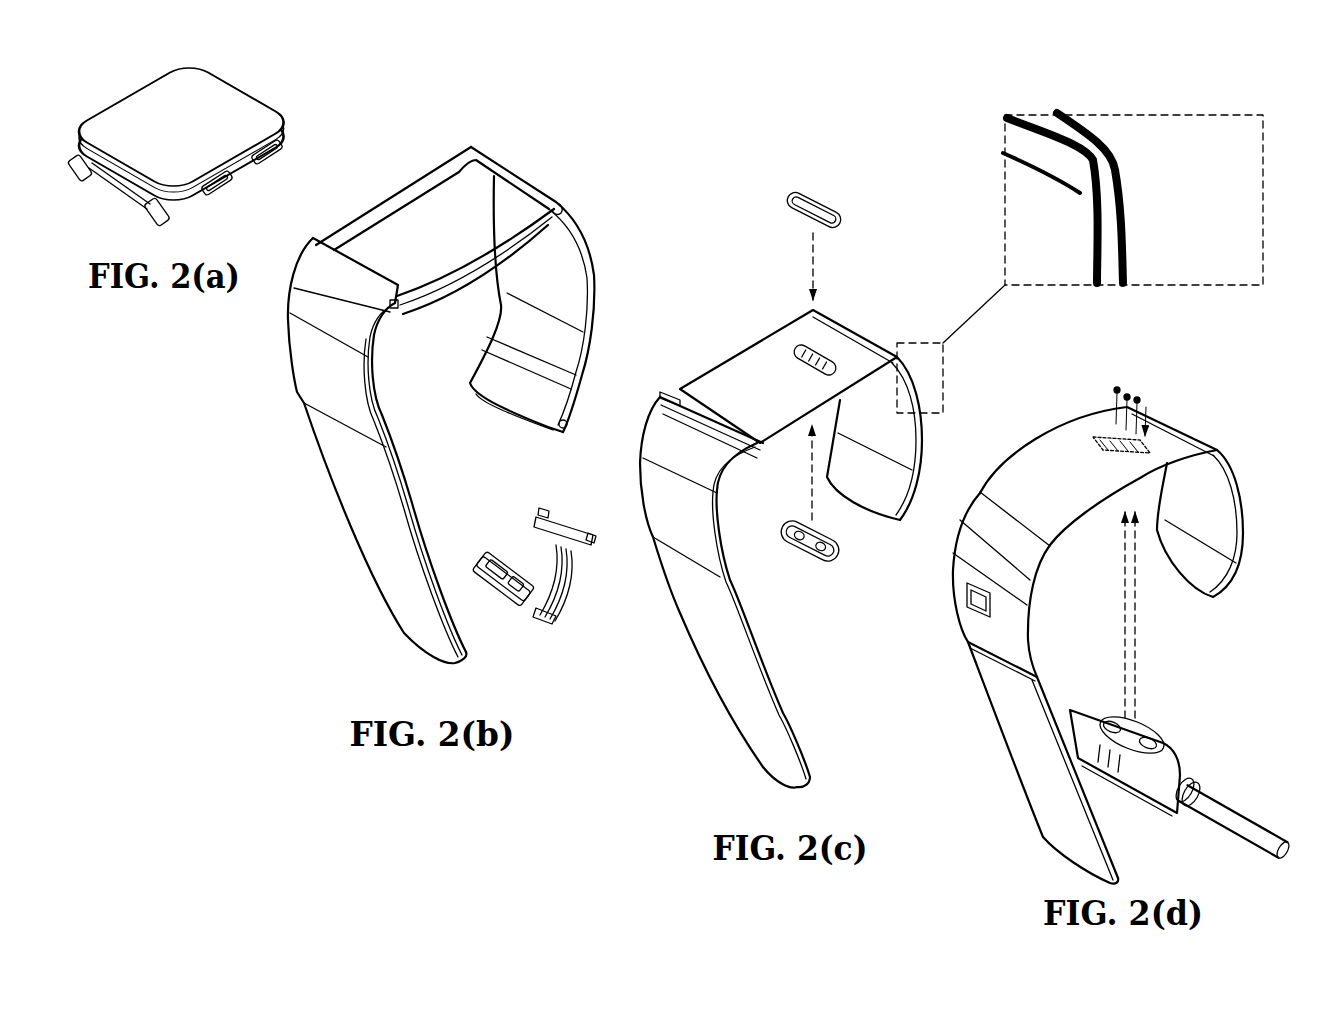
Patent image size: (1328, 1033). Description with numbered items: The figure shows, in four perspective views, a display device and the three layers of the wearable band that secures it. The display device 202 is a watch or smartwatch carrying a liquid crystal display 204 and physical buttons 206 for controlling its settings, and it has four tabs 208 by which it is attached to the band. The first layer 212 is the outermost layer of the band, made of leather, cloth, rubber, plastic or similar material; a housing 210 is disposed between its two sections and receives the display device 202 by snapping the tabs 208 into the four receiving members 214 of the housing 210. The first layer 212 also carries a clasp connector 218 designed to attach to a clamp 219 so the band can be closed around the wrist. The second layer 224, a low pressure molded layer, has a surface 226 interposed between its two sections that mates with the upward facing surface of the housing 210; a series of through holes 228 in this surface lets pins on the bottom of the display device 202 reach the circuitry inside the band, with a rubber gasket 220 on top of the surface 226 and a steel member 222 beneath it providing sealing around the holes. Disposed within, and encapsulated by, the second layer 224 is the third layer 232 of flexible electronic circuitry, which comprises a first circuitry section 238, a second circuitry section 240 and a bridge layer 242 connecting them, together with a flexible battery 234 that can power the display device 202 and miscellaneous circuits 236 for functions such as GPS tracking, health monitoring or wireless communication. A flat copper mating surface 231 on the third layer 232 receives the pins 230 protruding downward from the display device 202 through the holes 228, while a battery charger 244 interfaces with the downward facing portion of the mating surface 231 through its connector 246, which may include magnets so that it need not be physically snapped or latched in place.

In FIG. 2A, the display device 202 is at (291, 109).
In FIG. 2A, the display 204 is at (182, 113).
In FIG. 2A, the buttons 206 is at (256, 192).
In FIG. 2A, the tabs 208 is at (59, 184).
In FIG. 2B, the housing 210 is at (387, 191).
In FIG. 2B, the first layer 212 is at (603, 283).
In FIG. 2B, the receiving members 214 is at (401, 322).
In FIG. 2B, the clasp connector 218 is at (576, 425).
In FIG. 2B, the clamp 219 is at (535, 630).
In FIG. 2C, the rubber gasket 220 is at (852, 218).
In FIG. 2C, the steel member 222 is at (855, 558).
In FIG. 2C, the second layer 224 is at (876, 502).
In FIG. 2C, the surface 226 is at (731, 355).
In FIG. 2C, the through holes 228 is at (806, 342).
In FIG. 2D, the pins 230 is at (1150, 406).
In FIG. 2D, the mating surface 231 is at (1163, 450).
In FIG. 2C, the third layer 232 is at (1102, 165).
In FIG. 2D, the third layer 232 is at (1088, 412).
In FIG. 2D, the battery 234 is at (1036, 755).
In FIG. 2D, the miscellaneous circuits 236 is at (970, 604).
In FIG. 2D, the first circuitry section 238 is at (972, 670).
In FIG. 2D, the second circuitry section 240 is at (1250, 506).
In FIG. 2D, the bridge layer 242 is at (1080, 472).
In FIG. 2D, the battery charger 244 is at (1205, 762).
In FIG. 2D, the connector 246 is at (1162, 727).